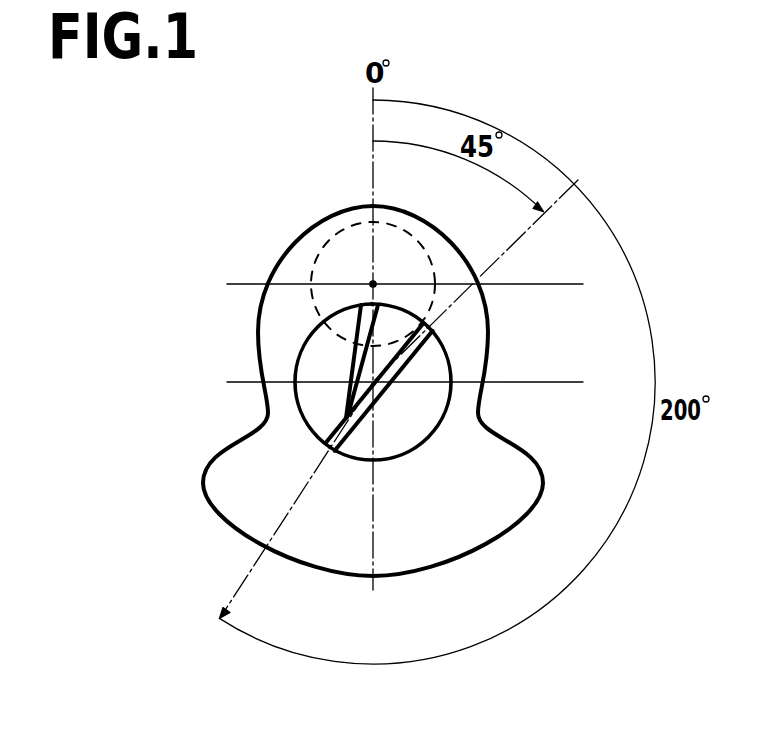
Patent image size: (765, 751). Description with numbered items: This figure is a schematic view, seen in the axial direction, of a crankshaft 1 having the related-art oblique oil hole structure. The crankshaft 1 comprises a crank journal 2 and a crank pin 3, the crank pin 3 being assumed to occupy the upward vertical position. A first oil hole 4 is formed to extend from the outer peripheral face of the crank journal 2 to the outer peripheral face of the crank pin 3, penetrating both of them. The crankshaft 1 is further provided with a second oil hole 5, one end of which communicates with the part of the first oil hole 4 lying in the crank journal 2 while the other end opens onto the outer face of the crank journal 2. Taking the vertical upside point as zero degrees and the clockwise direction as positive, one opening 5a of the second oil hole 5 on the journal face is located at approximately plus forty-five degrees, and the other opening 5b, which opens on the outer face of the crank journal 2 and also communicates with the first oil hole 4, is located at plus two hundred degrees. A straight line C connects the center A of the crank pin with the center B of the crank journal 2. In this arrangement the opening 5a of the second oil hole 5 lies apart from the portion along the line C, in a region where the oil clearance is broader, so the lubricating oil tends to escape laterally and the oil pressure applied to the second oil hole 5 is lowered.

The crankshaft 1 is at (545, 345).
The crank journal 2 is at (437, 411).
The crank pin 3 is at (343, 230).
The first oil hole 4 is at (350, 365).
The second oil hole 5 is at (378, 398).
The opening of the second oil hole 5a is at (432, 327).
The other opening of the second oil hole 5b is at (329, 446).
The center of the crank pin A is at (371, 283).
The center of the crank journal B is at (348, 385).
The straight line C is at (372, 303).